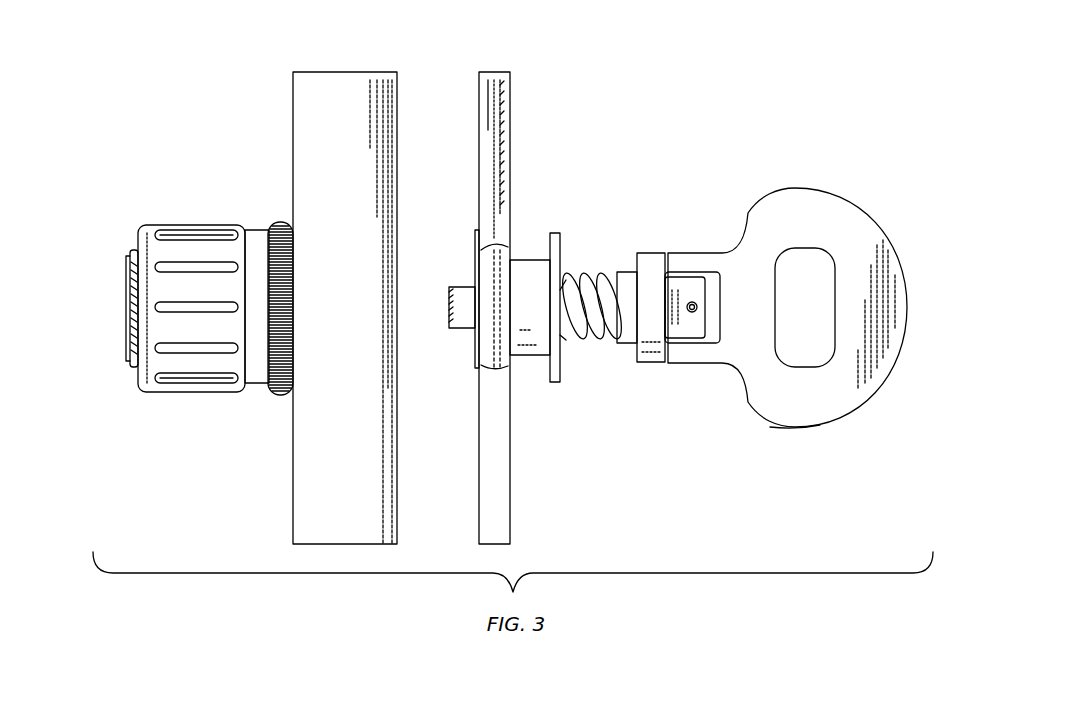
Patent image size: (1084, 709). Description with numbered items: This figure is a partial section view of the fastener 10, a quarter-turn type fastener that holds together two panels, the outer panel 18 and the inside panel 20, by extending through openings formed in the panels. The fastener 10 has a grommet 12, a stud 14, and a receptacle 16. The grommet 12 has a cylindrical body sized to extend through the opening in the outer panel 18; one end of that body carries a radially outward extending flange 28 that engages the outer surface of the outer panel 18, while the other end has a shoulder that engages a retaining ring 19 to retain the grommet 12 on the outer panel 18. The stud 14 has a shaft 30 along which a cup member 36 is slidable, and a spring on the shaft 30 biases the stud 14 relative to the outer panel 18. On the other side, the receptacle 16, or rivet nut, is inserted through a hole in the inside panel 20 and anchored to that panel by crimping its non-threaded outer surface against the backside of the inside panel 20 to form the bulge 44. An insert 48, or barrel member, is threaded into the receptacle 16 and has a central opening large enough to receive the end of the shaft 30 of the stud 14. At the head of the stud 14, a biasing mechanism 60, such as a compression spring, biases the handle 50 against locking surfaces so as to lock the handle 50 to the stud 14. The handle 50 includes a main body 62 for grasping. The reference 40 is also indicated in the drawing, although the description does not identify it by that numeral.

The fastener 10 is at (782, 118).
The grommet 12 is at (477, 388).
The stud 14 is at (600, 270).
The receptacle 16 is at (260, 388).
The outer panel 18 is at (510, 112).
The retaining ring 19 is at (480, 247).
The inside panel 20 is at (292, 113).
The radially outward extending flange 28 is at (506, 223).
The shaft 30 is at (566, 290).
The cup member 36 is at (528, 357).
The handle assembly 40 is at (682, 200).
The bulge 44 is at (280, 220).
The insert 48 is at (130, 257).
The handle 50 is at (845, 190).
The biasing mechanism 60 is at (598, 340).
The main body 62 is at (800, 428).